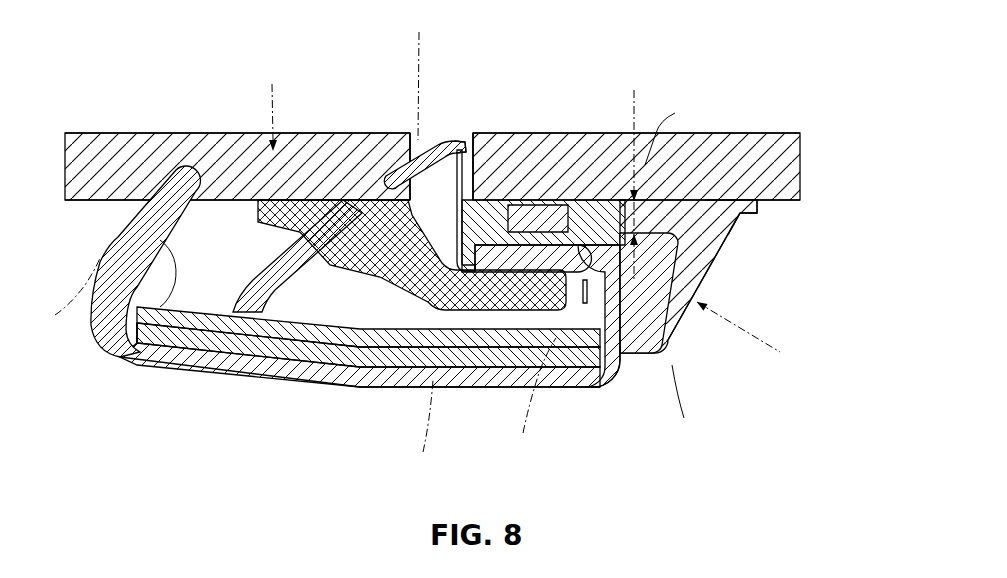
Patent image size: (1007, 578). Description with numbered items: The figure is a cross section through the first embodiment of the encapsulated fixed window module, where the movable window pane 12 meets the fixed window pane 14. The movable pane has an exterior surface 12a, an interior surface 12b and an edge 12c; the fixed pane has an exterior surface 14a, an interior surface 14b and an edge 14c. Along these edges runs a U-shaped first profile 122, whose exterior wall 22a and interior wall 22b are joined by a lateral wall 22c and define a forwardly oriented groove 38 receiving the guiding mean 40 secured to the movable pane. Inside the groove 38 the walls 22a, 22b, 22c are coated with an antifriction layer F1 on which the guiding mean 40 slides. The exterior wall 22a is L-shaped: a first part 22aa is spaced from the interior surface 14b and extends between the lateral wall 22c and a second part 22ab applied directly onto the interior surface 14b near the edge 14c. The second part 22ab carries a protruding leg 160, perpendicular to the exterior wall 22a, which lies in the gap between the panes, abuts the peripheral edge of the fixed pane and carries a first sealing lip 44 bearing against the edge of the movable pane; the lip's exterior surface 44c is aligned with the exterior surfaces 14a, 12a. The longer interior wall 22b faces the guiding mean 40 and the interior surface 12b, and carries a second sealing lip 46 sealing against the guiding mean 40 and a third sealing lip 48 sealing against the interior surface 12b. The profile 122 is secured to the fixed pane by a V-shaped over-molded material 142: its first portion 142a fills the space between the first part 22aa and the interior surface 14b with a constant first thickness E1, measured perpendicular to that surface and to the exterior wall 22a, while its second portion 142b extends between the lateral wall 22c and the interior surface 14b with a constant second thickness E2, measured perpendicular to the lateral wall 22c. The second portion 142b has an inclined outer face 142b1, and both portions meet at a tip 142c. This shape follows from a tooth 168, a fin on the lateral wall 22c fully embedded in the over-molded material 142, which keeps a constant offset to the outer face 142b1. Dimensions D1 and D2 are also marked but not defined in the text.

The movable window pane 12 is at (122, 128).
The exterior surface 12a is at (185, 133).
The interior surface 12b is at (77, 200).
The edge 12c is at (400, 133).
The fixed window pane 14 is at (790, 125).
The exterior surface 14a is at (736, 135).
The interior surface 14b is at (790, 205).
The edge 14c is at (497, 135).
The over-molded material 142 is at (712, 298).
The first portion of the over-molded material 142a is at (597, 140).
The second portion of the over-molded material 142b is at (742, 235).
The outer face 142b1 is at (715, 238).
The tip 142c is at (757, 200).
The exterior wall 22a is at (430, 298).
The first part of the exterior wall 22aa is at (551, 133).
The second part of the exterior wall 22ab is at (497, 213).
The interior wall 22b is at (337, 380).
The lateral wall 22c is at (608, 338).
The longitudinal groove 38 is at (477, 365).
The guiding mean 40 is at (372, 273).
The first sealing lip 44 is at (432, 128).
The exterior surface of the first sealing lip 44c is at (458, 145).
The second sealing lip 46 is at (242, 277).
The third sealing lip 48 is at (157, 243).
The first profile 122 is at (226, 393).
The protruding leg 160 is at (450, 173).
The tooth 168 is at (620, 372).
The first distance D1 is at (637, 103).
The second distance D2 is at (775, 360).
The first thickness E1 is at (673, 134).
The second thickness E2 is at (679, 404).
The antifriction layer F1 is at (293, 241).